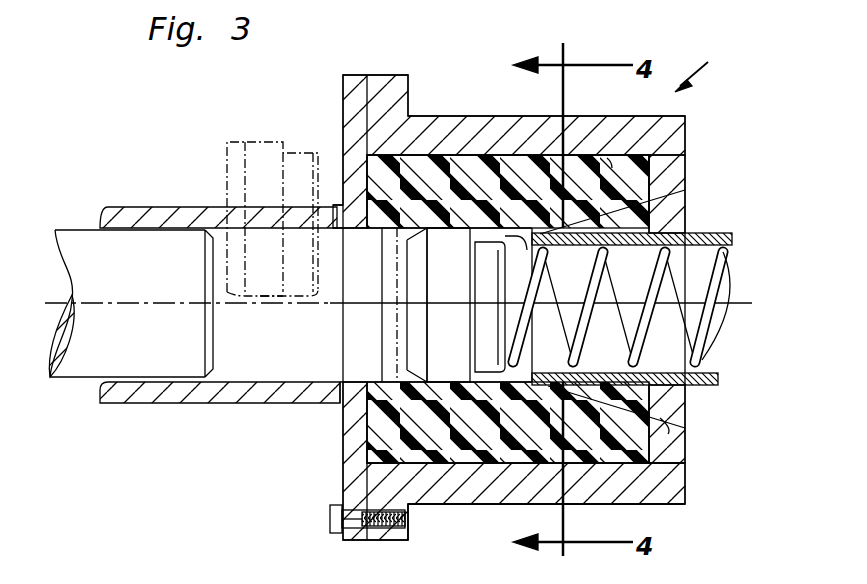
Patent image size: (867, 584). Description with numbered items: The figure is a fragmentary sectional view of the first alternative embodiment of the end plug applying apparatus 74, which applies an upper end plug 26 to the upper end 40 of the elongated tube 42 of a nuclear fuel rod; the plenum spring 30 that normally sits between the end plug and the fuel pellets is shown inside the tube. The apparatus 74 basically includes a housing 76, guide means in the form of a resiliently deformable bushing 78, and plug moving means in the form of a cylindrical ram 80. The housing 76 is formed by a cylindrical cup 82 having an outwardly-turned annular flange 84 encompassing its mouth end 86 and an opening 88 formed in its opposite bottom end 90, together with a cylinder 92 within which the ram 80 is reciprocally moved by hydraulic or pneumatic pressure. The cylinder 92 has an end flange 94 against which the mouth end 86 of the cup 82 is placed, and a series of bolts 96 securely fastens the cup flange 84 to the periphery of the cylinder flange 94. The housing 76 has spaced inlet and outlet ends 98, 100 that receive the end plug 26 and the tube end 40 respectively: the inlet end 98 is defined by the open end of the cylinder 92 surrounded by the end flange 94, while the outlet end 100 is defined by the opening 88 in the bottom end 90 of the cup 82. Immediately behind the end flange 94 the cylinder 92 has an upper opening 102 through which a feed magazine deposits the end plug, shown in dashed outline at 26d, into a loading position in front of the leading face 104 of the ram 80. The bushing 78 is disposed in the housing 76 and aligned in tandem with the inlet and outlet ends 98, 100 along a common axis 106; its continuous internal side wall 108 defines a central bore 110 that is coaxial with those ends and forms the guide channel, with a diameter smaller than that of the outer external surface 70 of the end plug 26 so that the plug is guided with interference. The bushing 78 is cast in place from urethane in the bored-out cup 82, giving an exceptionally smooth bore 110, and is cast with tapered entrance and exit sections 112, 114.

The upper end plug 26 is at (417, 328).
The end plug in dashed outline 26d is at (286, 297).
The plenum spring 30 is at (704, 350).
The upper end of tube 40 is at (686, 400).
The elongated tube 42 is at (734, 240).
The outer external surface 70 is at (435, 260).
The end plug applying apparatus 74 is at (737, 73).
The housing 76 is at (430, 120).
The resiliently deformable bushing 78 is at (612, 163).
The cylindrical ram 80 is at (86, 380).
The cylindrical cup 82 is at (622, 504).
The annular flange 84 is at (399, 75).
The mouth end 86 is at (407, 488).
The opening 88 is at (680, 198).
The bottom end 90 is at (680, 161).
The cylinder 92 is at (172, 403).
The end flange 94 is at (341, 454).
The bolts 96 is at (330, 508).
The inlet end 98 is at (334, 400).
The outlet end 100 is at (680, 438).
The upper opening 102 is at (332, 207).
The leading face 104 is at (215, 333).
The common axis 106 is at (736, 312).
The internal side wall 108 is at (483, 372).
The central bore 110 is at (531, 277).
The tapered entrance section 112 is at (368, 233).
The tapered exit section 114 is at (655, 215).